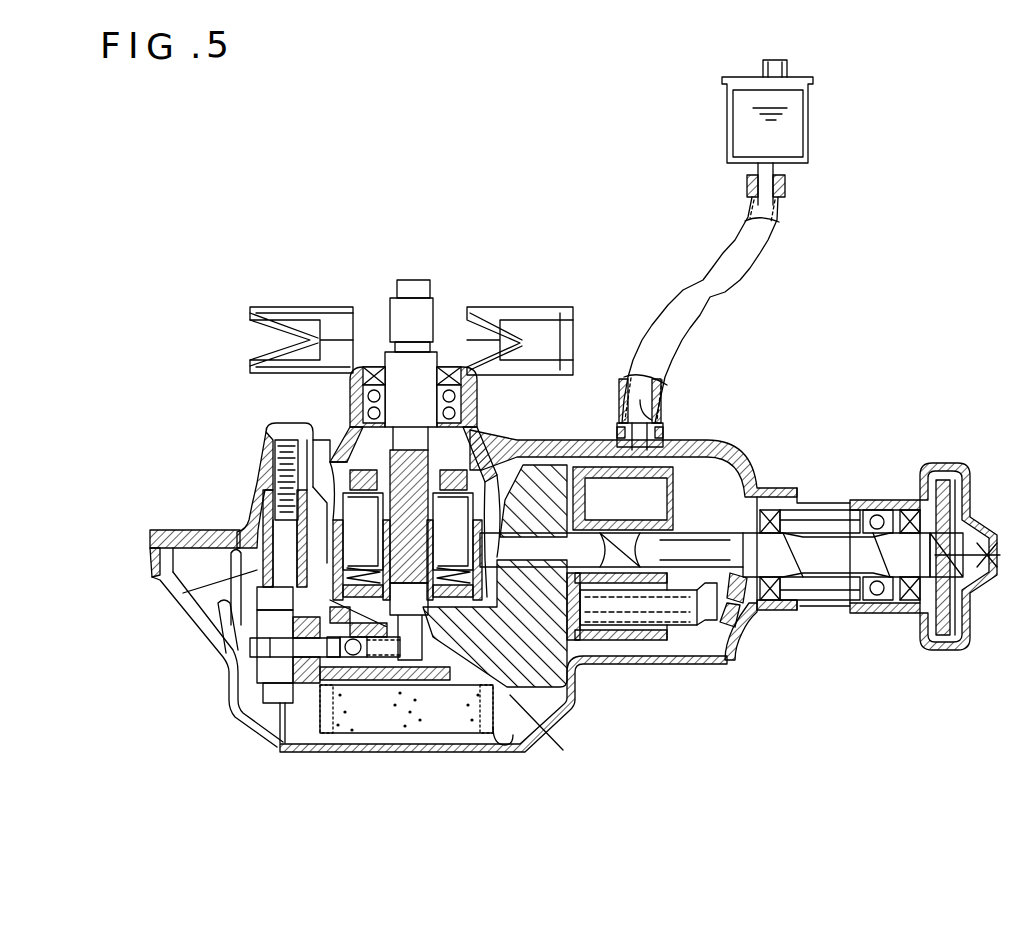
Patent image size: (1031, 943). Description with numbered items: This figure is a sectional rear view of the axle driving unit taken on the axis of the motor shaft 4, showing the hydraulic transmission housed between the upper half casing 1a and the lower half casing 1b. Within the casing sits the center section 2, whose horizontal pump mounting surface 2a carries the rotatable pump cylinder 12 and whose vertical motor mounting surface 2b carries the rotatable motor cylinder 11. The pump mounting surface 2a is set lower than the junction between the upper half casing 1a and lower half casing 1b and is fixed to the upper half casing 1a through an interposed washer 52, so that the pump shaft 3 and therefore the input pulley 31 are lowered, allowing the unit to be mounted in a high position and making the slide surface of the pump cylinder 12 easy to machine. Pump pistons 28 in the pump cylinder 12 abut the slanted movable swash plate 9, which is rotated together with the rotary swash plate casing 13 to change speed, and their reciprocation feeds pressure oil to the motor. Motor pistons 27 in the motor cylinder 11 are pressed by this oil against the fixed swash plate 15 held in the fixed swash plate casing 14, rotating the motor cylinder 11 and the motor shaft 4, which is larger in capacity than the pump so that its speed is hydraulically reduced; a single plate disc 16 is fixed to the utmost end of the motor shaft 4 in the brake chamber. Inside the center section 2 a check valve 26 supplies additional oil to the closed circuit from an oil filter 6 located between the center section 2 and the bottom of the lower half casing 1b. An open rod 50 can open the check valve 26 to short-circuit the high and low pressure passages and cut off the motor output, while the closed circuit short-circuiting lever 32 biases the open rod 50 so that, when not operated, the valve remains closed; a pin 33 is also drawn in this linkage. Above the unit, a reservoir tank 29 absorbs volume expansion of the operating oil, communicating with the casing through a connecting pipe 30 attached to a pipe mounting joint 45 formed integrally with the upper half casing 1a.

The upper half casing 1a is at (255, 470).
The lower half casing 1b is at (218, 660).
The center section 2 is at (570, 707).
The pump mounting surface 2a is at (563, 750).
The motor mounting surface 2b is at (597, 613).
The pump shaft 3 is at (430, 290).
The motor shaft 4 is at (830, 540).
The oil filter 6 is at (395, 701).
The movable swash plate 9 is at (428, 420).
The motor cylinder 11 is at (662, 640).
The pump cylinder 12 is at (337, 450).
The rotary swash plate casing 13 is at (480, 457).
The fixed swash plate casing 14 is at (733, 493).
The fixed swash plate 15 is at (738, 620).
The single plate disc 16 is at (950, 623).
The check valve 26 is at (406, 710).
The motor pistons 27 is at (623, 498).
The pump pistons 28 is at (253, 528).
The reservoir tank 29 is at (727, 133).
The connecting pipe 30 is at (692, 246).
The input pulley 31 is at (313, 307).
The closed circuit short-circuiting lever 32 is at (167, 593).
The pin 33 is at (280, 743).
The pipe mounting joint 45 is at (677, 398).
The open rod 50 is at (225, 695).
The washer 52 is at (175, 533).